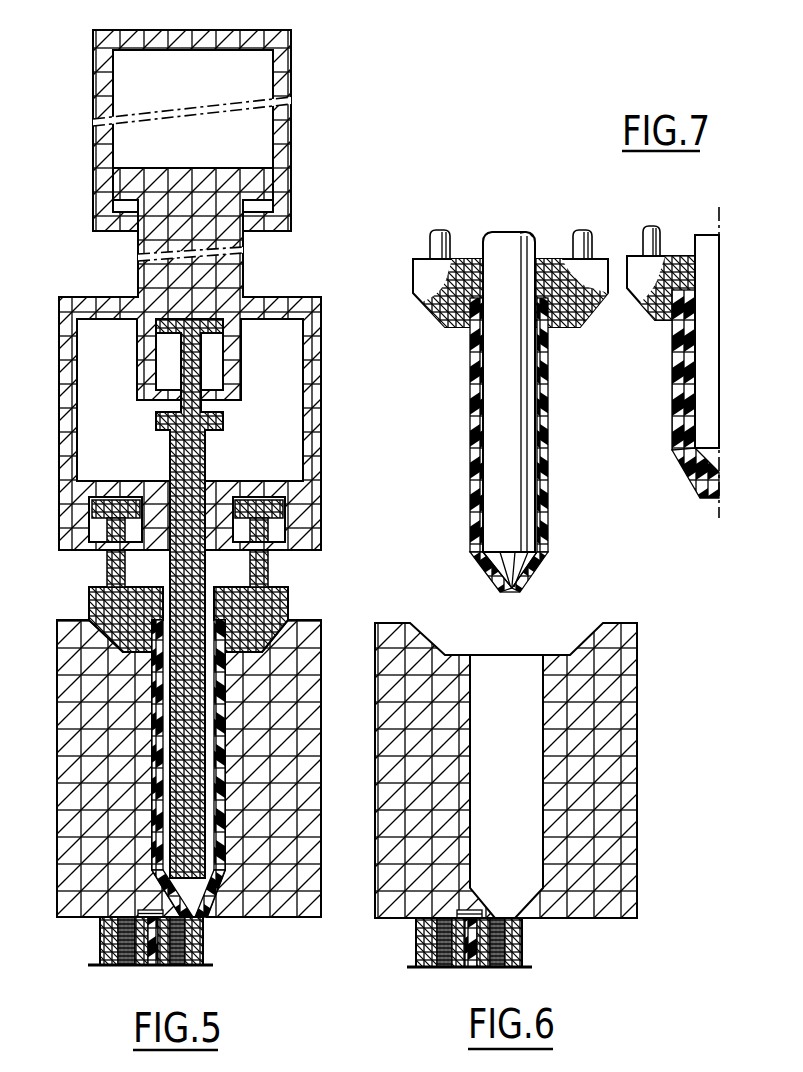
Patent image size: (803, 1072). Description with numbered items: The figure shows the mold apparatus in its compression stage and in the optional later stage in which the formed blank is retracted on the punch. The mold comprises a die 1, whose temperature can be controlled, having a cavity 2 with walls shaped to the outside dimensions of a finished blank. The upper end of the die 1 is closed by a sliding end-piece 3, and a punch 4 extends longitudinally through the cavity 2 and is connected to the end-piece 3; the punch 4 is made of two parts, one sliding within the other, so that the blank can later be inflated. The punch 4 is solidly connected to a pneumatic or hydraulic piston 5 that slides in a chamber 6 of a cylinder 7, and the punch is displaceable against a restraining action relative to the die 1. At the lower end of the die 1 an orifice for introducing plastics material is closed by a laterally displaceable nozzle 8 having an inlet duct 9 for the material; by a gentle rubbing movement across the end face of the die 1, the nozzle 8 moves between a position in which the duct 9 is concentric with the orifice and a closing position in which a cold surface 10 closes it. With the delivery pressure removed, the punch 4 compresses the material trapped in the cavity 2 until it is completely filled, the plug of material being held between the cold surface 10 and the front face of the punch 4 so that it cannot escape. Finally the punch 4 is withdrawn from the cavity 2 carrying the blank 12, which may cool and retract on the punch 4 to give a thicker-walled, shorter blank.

In FIG. 5, the die 1 is at (82, 737).
In FIG. 6, the die 1 is at (607, 838).
In FIG. 6, the cavity 2 is at (510, 797).
In FIG. 5, the sliding end-piece 3 is at (110, 601).
In FIG. 7, the sliding end-piece 3 is at (453, 310).
In FIG. 5, the punch 4 is at (173, 683).
In FIG. 7, the punch 4 is at (503, 451).
In FIG. 5, the piston 5 is at (263, 193).
In FIG. 5, the chamber 6 is at (262, 141).
In FIG. 5, the cylinder 7 is at (268, 176).
In FIG. 5, the nozzle 8 is at (145, 965).
In FIG. 6, the nozzle 8 is at (472, 967).
In FIG. 5, the inlet duct 9 is at (157, 953).
In FIG. 6, the inlet duct 9 is at (493, 957).
In FIG. 5, the cold surface 10 is at (100, 951).
In FIG. 6, the cold surface 10 is at (416, 952).
In FIG. 7, the blank 12 is at (470, 488).